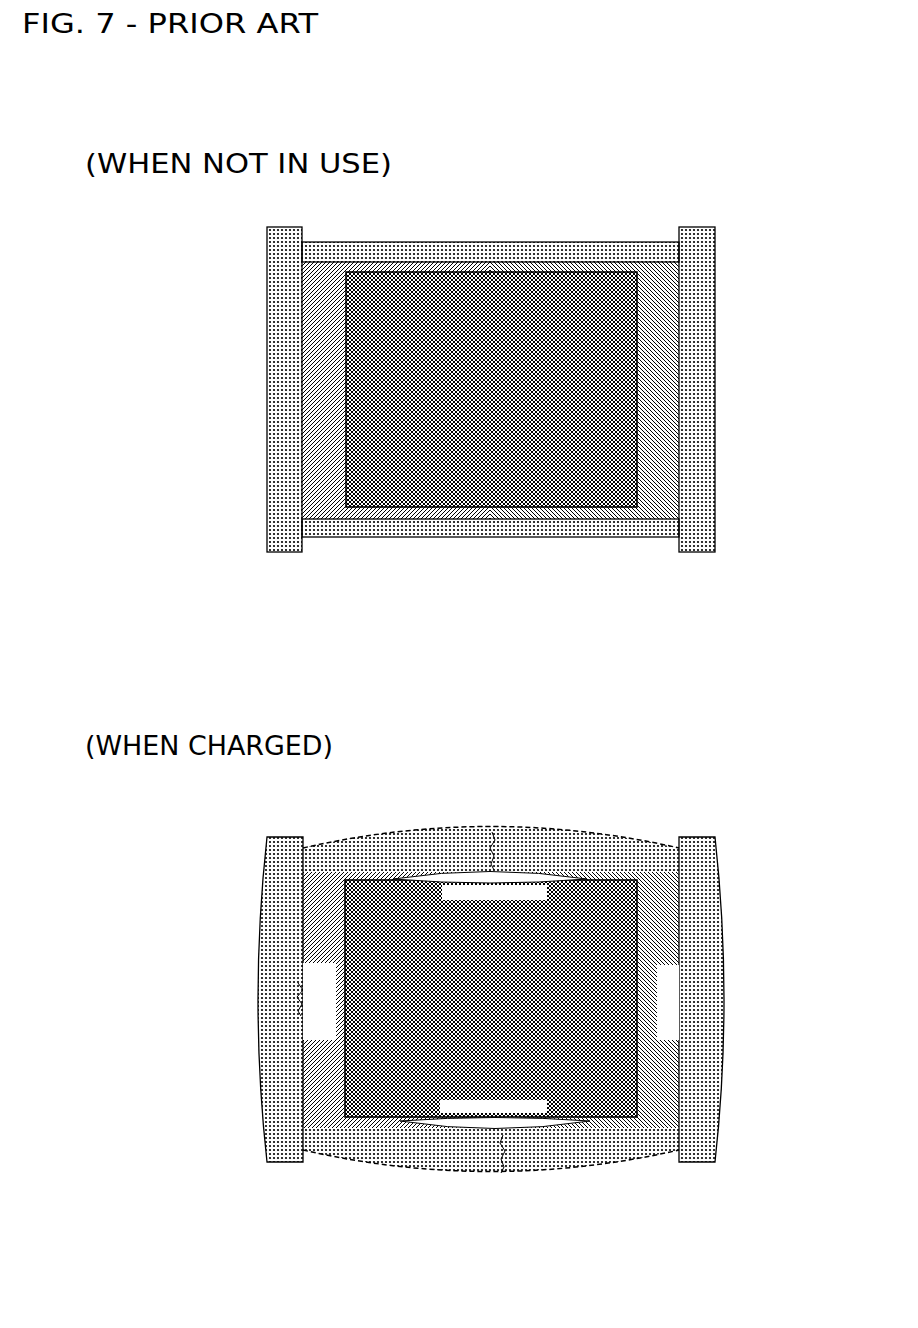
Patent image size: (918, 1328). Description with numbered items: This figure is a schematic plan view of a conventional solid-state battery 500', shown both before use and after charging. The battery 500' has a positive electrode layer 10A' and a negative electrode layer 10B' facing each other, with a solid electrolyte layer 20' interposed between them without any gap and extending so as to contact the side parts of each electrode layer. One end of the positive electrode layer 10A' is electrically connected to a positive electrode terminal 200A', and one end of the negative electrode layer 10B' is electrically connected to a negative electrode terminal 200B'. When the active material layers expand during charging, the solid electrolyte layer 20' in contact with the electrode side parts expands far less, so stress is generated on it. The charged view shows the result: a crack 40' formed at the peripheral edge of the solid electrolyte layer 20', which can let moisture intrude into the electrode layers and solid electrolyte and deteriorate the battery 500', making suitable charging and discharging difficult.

The solid-state battery 500' is at (568, 627).
The solid electrolyte layer 20' is at (490, 674).
The positive electrode layer 10A' is at (655, 695).
The negative electrode layer 10B' is at (325, 695).
The positive electrode terminal 200A' is at (754, 694).
The negative electrode terminal 200B' is at (219, 694).
The crack 40' is at (491, 969).